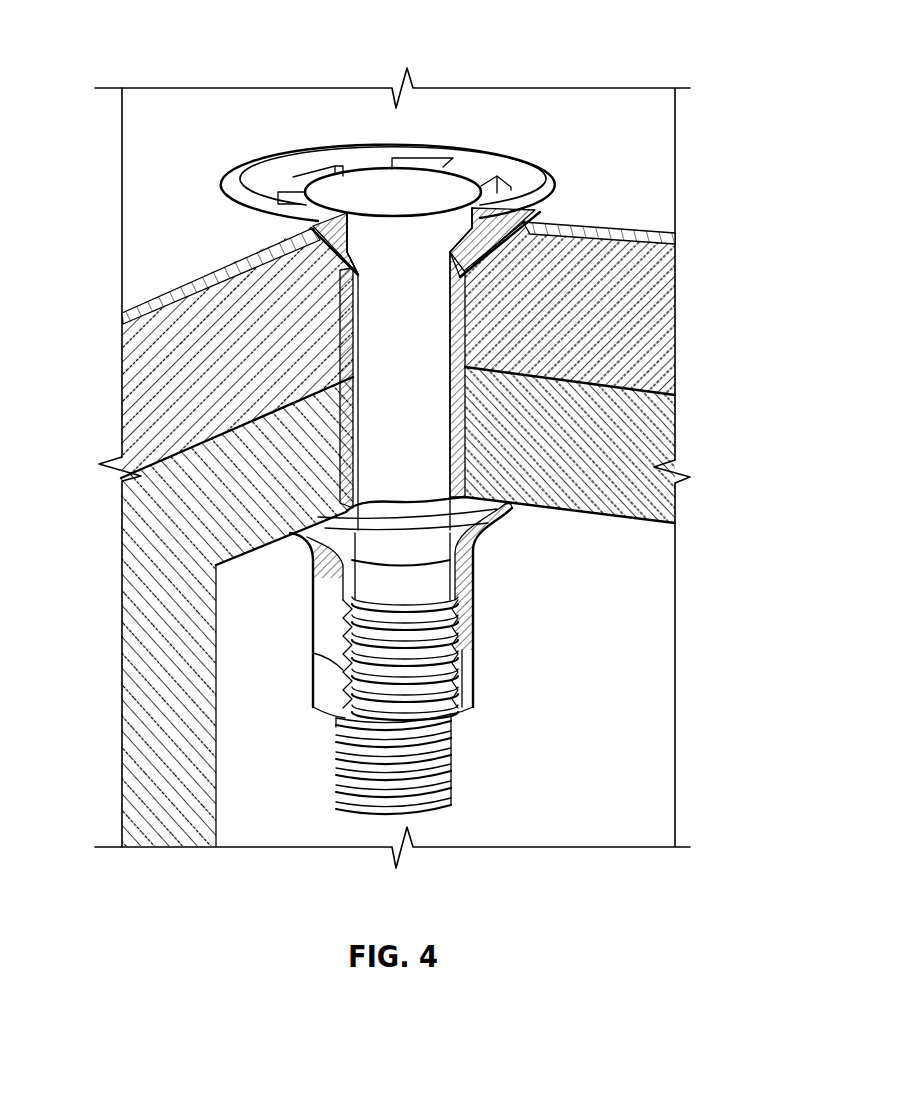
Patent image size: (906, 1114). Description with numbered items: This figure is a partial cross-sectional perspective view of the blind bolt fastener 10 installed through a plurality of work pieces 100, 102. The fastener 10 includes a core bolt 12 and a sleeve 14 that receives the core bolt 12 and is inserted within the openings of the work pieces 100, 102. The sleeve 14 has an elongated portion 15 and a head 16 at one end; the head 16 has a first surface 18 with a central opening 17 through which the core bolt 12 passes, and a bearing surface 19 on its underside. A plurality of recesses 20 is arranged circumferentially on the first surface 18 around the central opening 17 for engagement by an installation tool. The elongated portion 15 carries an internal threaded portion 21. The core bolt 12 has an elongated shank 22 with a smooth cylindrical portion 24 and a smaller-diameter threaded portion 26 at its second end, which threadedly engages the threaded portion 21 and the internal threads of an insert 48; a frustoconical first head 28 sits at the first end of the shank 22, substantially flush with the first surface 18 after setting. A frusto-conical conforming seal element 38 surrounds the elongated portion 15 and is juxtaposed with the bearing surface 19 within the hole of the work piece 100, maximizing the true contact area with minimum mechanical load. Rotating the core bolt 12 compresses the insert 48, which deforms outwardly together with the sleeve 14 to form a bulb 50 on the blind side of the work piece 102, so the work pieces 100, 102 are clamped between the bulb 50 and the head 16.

The fastener 10 is at (455, 150).
The core bolt 12 is at (553, 223).
The sleeve 14 is at (462, 355).
The elongated portion 15 is at (463, 443).
The head 16 is at (262, 193).
The central opening 17 is at (463, 190).
The first surface 18 is at (367, 163).
The bearing surface 19 is at (343, 260).
The recesses 20 is at (407, 165).
The internal threaded portion 21 is at (343, 627).
The elongated shank 22 is at (412, 446).
The smooth cylindrical portion 24 is at (400, 387).
The threaded portion 26 is at (433, 752).
The first head 28 is at (397, 232).
The conforming seal element 38 is at (527, 162).
The insert 48 is at (412, 557).
The bulb 50 is at (497, 531).
The work piece 100 is at (620, 310).
The work piece 102 is at (603, 436).